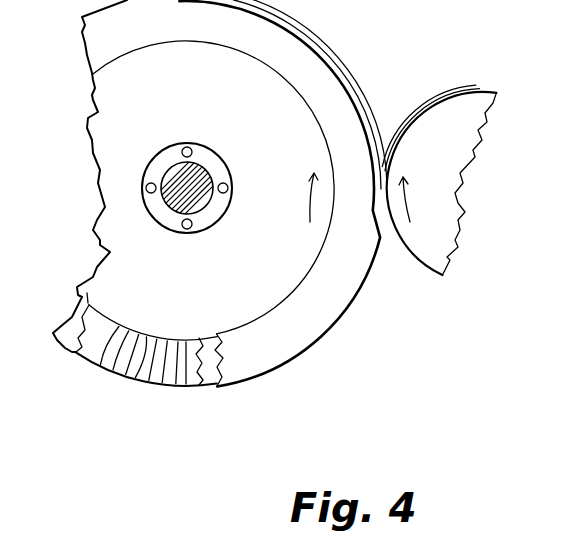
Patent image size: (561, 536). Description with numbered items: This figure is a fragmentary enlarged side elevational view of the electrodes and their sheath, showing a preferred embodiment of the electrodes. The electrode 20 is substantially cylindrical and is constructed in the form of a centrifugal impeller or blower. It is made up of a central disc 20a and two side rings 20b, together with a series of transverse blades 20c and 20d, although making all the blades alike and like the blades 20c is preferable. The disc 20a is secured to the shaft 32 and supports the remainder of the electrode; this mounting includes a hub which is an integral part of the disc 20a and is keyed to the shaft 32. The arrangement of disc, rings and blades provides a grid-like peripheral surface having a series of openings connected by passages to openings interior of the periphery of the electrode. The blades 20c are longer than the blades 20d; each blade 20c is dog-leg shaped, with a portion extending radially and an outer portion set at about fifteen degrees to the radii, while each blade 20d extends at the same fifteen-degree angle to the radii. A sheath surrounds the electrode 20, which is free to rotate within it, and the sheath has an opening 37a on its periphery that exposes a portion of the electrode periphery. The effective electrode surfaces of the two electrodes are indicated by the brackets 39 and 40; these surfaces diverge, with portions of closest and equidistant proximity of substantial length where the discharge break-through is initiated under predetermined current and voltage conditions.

The electrode 20 is at (164, 398).
The central disc 20a is at (213, 187).
The side rings 20b is at (208, 370).
The transverse blades 20c is at (142, 355).
The transverse blades 20d is at (103, 358).
The shaft 32 is at (198, 173).
The opening 37a is at (302, 42).
The bracket 39 is at (418, 115).
The bracket 40 is at (345, 64).